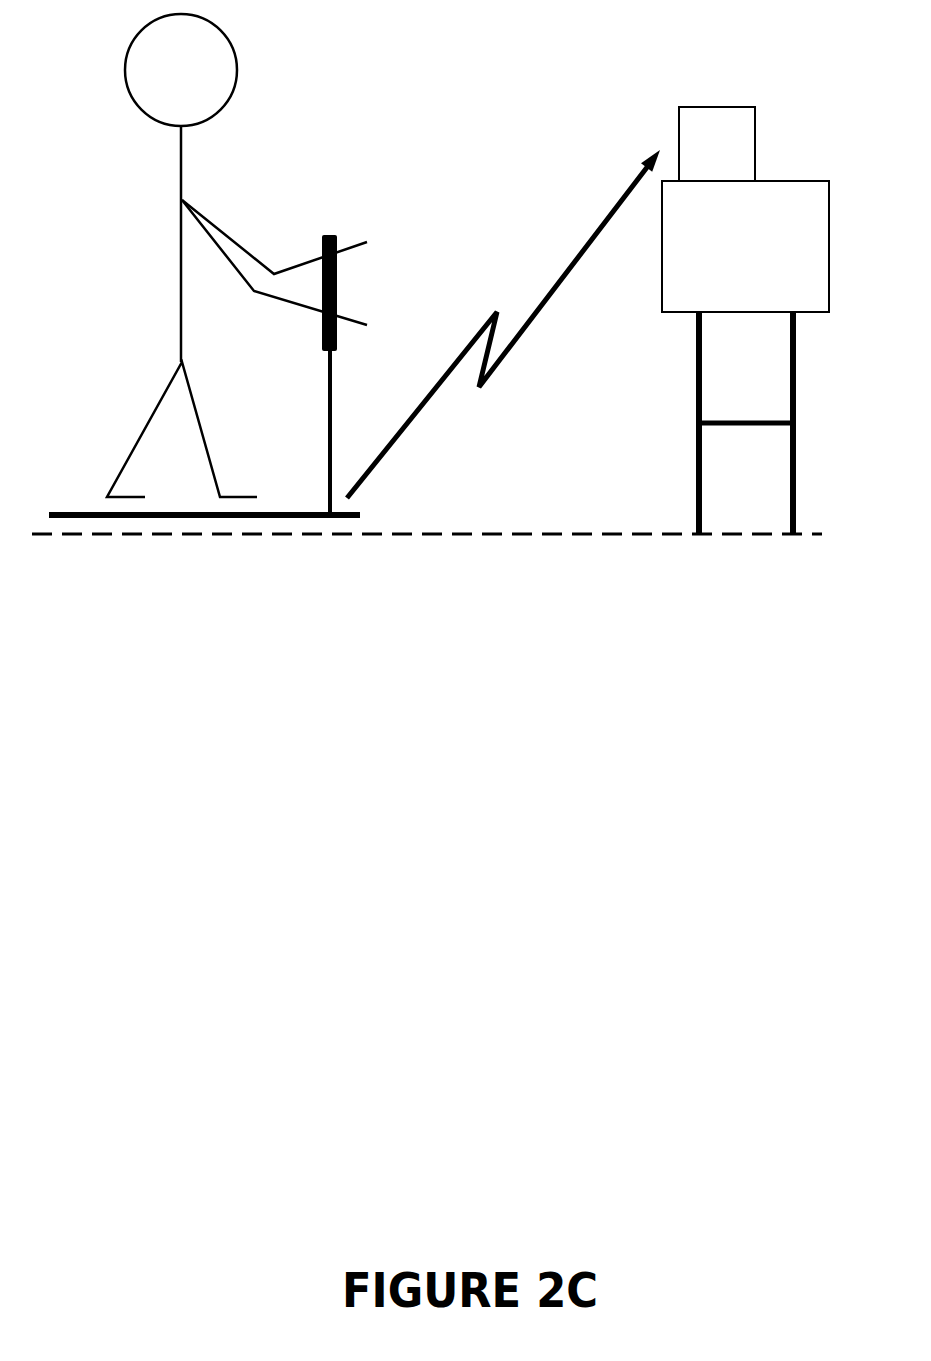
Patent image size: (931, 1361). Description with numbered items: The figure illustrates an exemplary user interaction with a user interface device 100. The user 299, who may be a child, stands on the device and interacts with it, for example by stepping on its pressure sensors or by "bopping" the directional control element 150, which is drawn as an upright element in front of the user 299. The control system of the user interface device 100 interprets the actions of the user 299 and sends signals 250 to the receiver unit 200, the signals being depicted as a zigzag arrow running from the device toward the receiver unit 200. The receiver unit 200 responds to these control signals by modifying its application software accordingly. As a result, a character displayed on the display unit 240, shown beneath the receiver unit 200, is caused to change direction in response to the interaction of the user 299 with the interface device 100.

The user 299 is at (213, 43).
The user interface device 100 is at (318, 365).
The directional control element 150 is at (343, 293).
The signals 250 is at (515, 367).
The receiver unit 200 is at (697, 156).
The display unit 240 is at (766, 257).